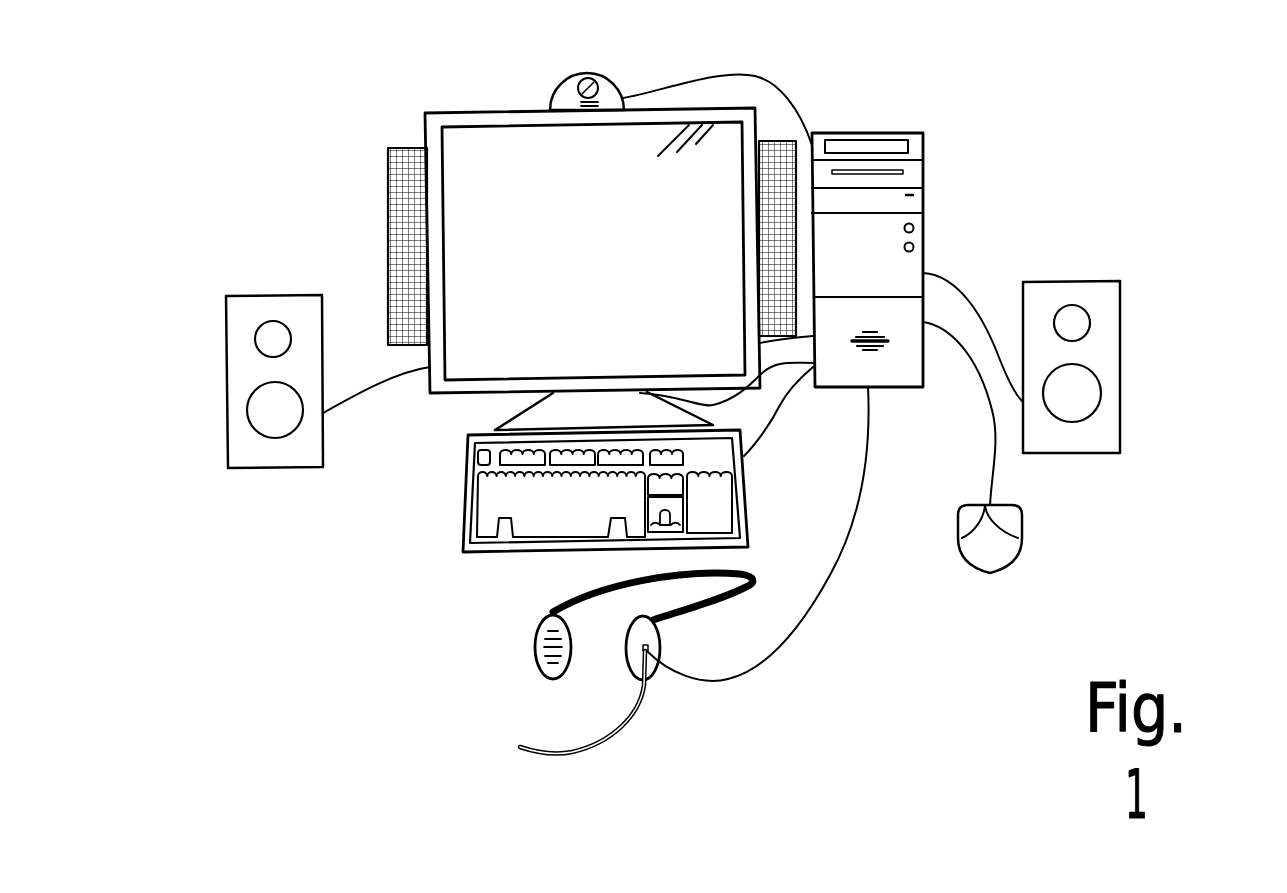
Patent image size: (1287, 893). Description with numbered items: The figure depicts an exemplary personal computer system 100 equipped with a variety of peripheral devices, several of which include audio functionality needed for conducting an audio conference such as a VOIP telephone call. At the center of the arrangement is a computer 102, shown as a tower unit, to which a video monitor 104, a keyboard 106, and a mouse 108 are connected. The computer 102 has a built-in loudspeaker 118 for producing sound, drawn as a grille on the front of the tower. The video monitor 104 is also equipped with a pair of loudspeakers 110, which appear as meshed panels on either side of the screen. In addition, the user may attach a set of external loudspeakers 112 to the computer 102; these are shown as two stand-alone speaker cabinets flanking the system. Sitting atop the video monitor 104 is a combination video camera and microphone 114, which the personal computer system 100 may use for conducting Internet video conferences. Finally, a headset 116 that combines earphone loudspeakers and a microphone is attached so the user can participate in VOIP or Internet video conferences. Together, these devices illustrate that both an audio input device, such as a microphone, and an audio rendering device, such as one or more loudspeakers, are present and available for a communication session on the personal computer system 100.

The personal computer system 100 is at (265, 121).
The computer 102 is at (923, 134).
The video monitor 104 is at (458, 112).
The keyboard 106 is at (465, 497).
The mouse 108 is at (1015, 558).
The pair of loudspeakers 110 is at (388, 213).
The external loudspeakers 112 is at (226, 357).
The combination video camera and microphone 114 is at (595, 73).
The headset 116 is at (577, 603).
The built-in loudspeaker 118 is at (876, 354).